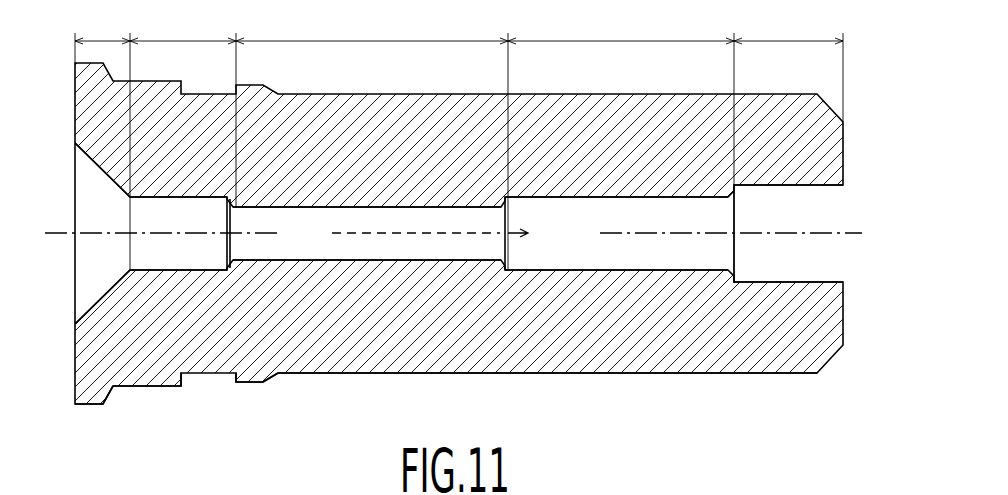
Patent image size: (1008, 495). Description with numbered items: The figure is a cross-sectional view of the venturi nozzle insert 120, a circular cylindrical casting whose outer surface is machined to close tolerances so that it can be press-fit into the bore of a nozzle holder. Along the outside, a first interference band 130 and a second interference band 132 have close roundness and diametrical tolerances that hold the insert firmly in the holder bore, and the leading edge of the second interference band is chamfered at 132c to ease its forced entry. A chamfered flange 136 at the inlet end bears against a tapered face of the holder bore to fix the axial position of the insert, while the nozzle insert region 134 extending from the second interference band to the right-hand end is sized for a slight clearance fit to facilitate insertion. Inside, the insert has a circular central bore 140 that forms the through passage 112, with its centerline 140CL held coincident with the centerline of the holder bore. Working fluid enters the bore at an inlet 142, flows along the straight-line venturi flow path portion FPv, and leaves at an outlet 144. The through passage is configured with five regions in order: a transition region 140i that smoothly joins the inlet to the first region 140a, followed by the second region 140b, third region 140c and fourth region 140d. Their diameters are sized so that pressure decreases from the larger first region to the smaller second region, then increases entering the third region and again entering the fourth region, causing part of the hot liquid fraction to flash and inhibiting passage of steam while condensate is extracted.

The through passage 112 is at (608, 262).
The venturi nozzle insert 120 is at (75, 112).
The first interference band 130 is at (133, 390).
The second interference band 132 is at (250, 383).
The chamfer 132c is at (272, 378).
The nozzle insert region 134 is at (663, 375).
The chamfered flange 136 is at (93, 405).
The central bore 140 is at (140, 209).
The centerline of the nozzle insert bore 140CL is at (885, 193).
The transition region 140i is at (103, 40).
The first region 140a is at (185, 40).
The second region 140b is at (360, 40).
The third region 140c is at (603, 40).
The fourth region 140d is at (771, 40).
The inlet 142 is at (72, 272).
The outlet 144 is at (845, 262).
The venturi flow path portion FPv is at (428, 237).